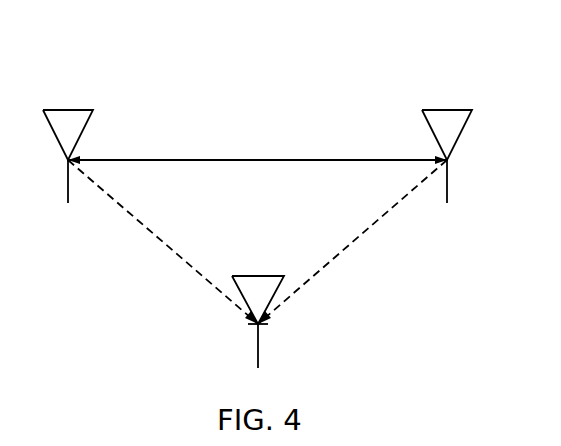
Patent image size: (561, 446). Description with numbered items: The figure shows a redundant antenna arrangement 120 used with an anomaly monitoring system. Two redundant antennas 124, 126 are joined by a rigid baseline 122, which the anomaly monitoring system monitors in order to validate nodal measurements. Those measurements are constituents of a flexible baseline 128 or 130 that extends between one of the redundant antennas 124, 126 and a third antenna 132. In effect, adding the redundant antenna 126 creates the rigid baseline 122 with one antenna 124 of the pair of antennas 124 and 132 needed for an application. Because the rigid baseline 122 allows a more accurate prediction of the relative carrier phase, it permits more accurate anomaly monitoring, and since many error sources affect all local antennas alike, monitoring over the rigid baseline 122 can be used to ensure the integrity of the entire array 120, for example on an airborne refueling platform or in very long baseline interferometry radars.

The antenna arrangement 120 is at (432, 45).
The rigid baseline 122 is at (220, 160).
The redundant antenna 124 is at (83, 110).
The redundant antenna 126 is at (462, 110).
The flexible baseline 128 is at (145, 228).
The flexible baseline 130 is at (370, 227).
The third antenna 132 is at (243, 276).